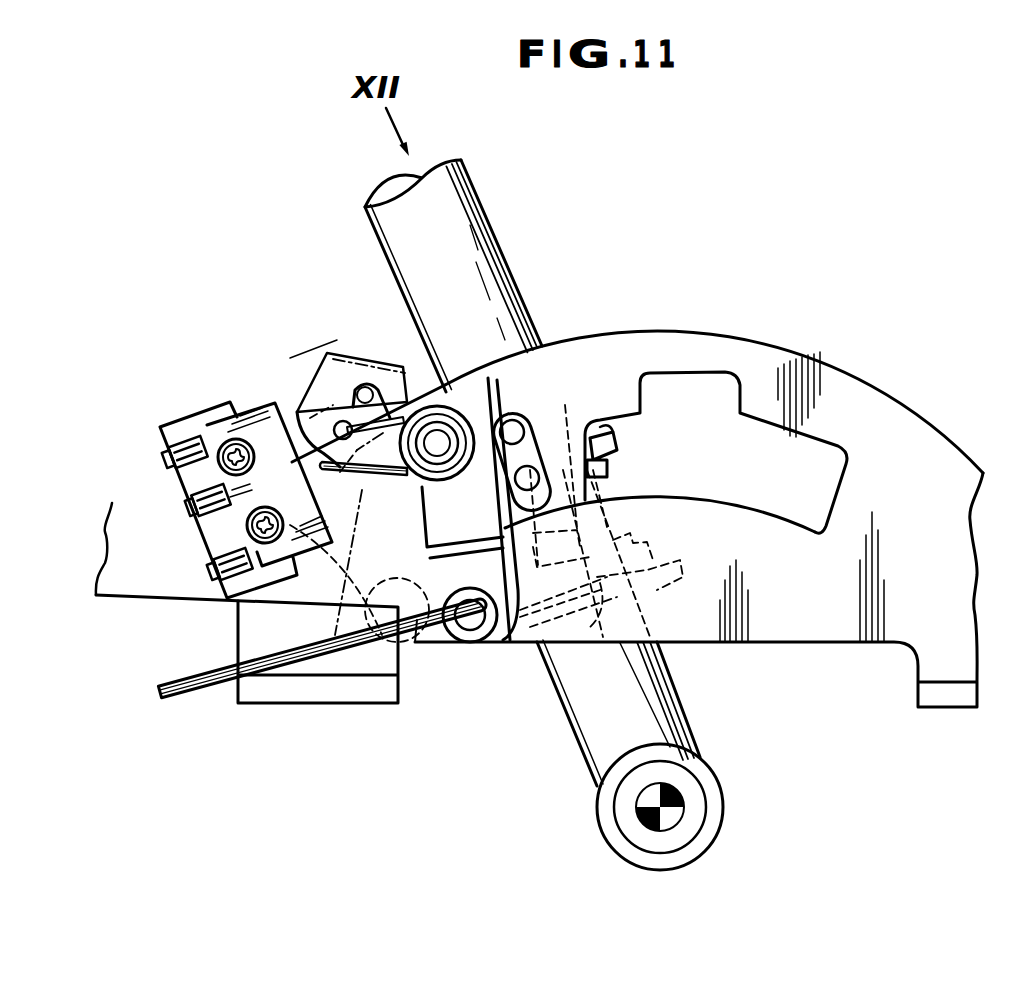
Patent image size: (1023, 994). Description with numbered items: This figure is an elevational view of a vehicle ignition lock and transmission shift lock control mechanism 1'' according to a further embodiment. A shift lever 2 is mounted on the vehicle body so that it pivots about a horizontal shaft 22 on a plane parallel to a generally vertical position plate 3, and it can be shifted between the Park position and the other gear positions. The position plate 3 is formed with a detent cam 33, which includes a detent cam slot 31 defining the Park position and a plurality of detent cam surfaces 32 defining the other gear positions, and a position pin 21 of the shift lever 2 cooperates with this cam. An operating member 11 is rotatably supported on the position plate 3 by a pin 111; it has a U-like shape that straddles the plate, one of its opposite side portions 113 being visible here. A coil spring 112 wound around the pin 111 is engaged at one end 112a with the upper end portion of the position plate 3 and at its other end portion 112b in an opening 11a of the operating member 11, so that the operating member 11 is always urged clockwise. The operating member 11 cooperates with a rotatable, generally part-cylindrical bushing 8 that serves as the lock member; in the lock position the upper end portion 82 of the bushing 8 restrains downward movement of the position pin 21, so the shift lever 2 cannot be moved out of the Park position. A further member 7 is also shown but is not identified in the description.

The apparatus (third embodiment) 1'' is at (233, 131).
The shift lever 2 is at (478, 243).
The position plate 3 is at (852, 385).
The base block 7 is at (310, 660).
The bushing 8 is at (624, 468).
The operating member 11 is at (484, 668).
The opening 11a is at (318, 400).
The position pin 21 is at (517, 427).
The horizontal shaft 22 is at (712, 787).
The detent cam slot 31 is at (617, 337).
The detent cam surfaces 32 is at (683, 375).
The detent cam 33 is at (745, 510).
The upper end portion of the bushing 82 is at (605, 430).
The pin 111 is at (437, 443).
The coil spring 112 is at (404, 640).
The end of the coil spring 112a is at (322, 463).
The other end portion of the coil spring 112b is at (300, 410).
The side portion of the operating member 113 is at (497, 395).